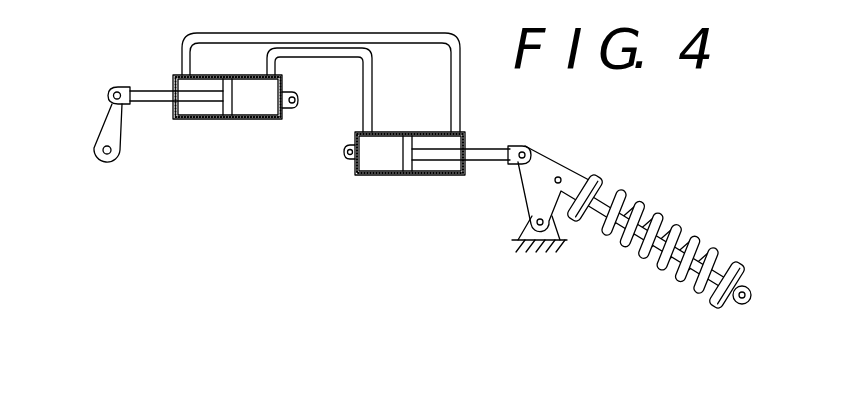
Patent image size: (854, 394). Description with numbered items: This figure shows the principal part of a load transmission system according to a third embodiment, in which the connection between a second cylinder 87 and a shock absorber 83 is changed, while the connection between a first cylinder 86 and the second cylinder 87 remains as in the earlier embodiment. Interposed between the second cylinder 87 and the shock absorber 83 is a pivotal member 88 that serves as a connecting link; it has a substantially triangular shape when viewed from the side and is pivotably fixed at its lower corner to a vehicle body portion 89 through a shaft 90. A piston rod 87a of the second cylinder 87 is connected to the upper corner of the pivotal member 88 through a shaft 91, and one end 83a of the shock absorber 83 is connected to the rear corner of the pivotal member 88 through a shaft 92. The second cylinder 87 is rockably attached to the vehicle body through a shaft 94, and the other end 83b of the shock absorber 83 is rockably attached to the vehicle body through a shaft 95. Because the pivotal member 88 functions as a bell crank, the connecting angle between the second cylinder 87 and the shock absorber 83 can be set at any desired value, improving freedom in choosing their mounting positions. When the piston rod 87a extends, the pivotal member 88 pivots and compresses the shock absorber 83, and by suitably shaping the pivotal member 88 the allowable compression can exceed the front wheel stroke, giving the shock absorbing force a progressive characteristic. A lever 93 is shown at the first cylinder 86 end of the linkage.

The shock absorber 83 is at (680, 246).
The one end of the shock absorber 83a is at (582, 182).
The other end of the shock absorber 83b is at (735, 303).
The first cylinder 86 is at (253, 120).
The second cylinder 87 is at (430, 176).
The piston rod 87a is at (488, 161).
The pivotal member 88 is at (540, 203).
The vehicle body portion 89 is at (553, 244).
The shaft 90 is at (539, 244).
The shaft 91 is at (524, 146).
The shaft 92 is at (563, 173).
The operating lever 93 is at (80, 149).
The shaft 94 is at (348, 146).
The shaft 95 is at (746, 305).